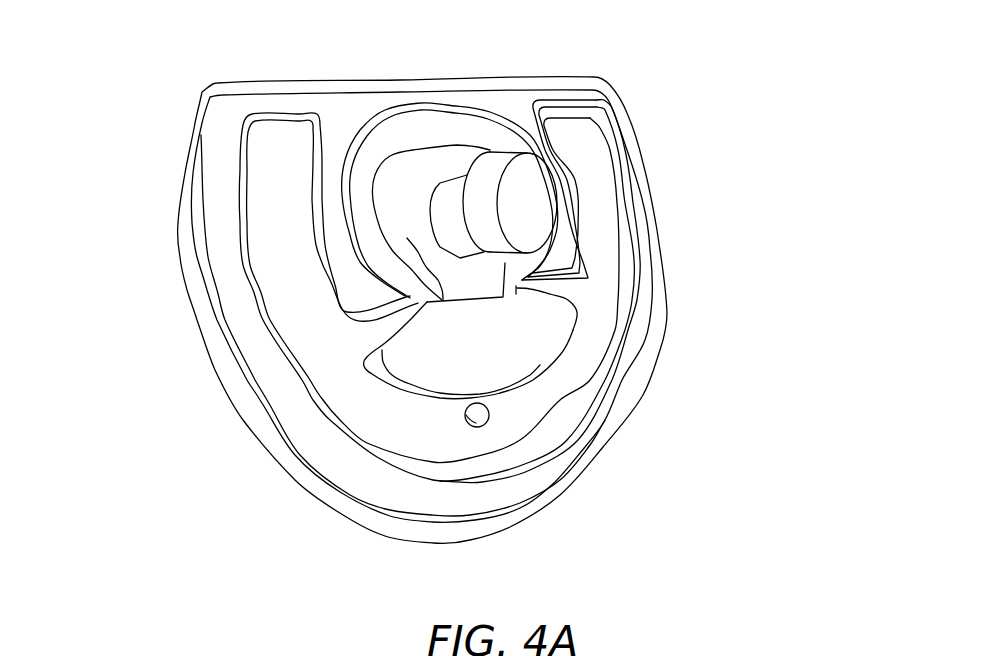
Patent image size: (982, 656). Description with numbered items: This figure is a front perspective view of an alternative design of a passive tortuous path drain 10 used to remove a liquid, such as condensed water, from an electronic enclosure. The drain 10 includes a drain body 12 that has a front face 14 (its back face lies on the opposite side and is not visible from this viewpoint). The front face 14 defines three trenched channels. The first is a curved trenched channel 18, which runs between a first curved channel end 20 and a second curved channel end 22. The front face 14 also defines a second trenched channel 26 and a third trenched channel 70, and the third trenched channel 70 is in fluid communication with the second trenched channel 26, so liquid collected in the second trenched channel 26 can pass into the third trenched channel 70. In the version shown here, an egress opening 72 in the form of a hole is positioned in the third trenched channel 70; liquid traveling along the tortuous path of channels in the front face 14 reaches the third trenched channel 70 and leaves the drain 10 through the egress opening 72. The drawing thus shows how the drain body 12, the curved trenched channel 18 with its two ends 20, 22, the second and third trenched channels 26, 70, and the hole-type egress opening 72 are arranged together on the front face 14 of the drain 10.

The passive tortuous path drain 10 is at (700, 153).
The drain body 12 is at (317, 110).
The front face 14 is at (227, 225).
The curved trenched channel 18 is at (413, 148).
The first curved channel end 20 is at (583, 312).
The second curved channel end 22 is at (583, 312).
The second trenched channel 26 is at (460, 309).
The third trenched channel 70 is at (417, 435).
The egress opening 72 is at (477, 416).